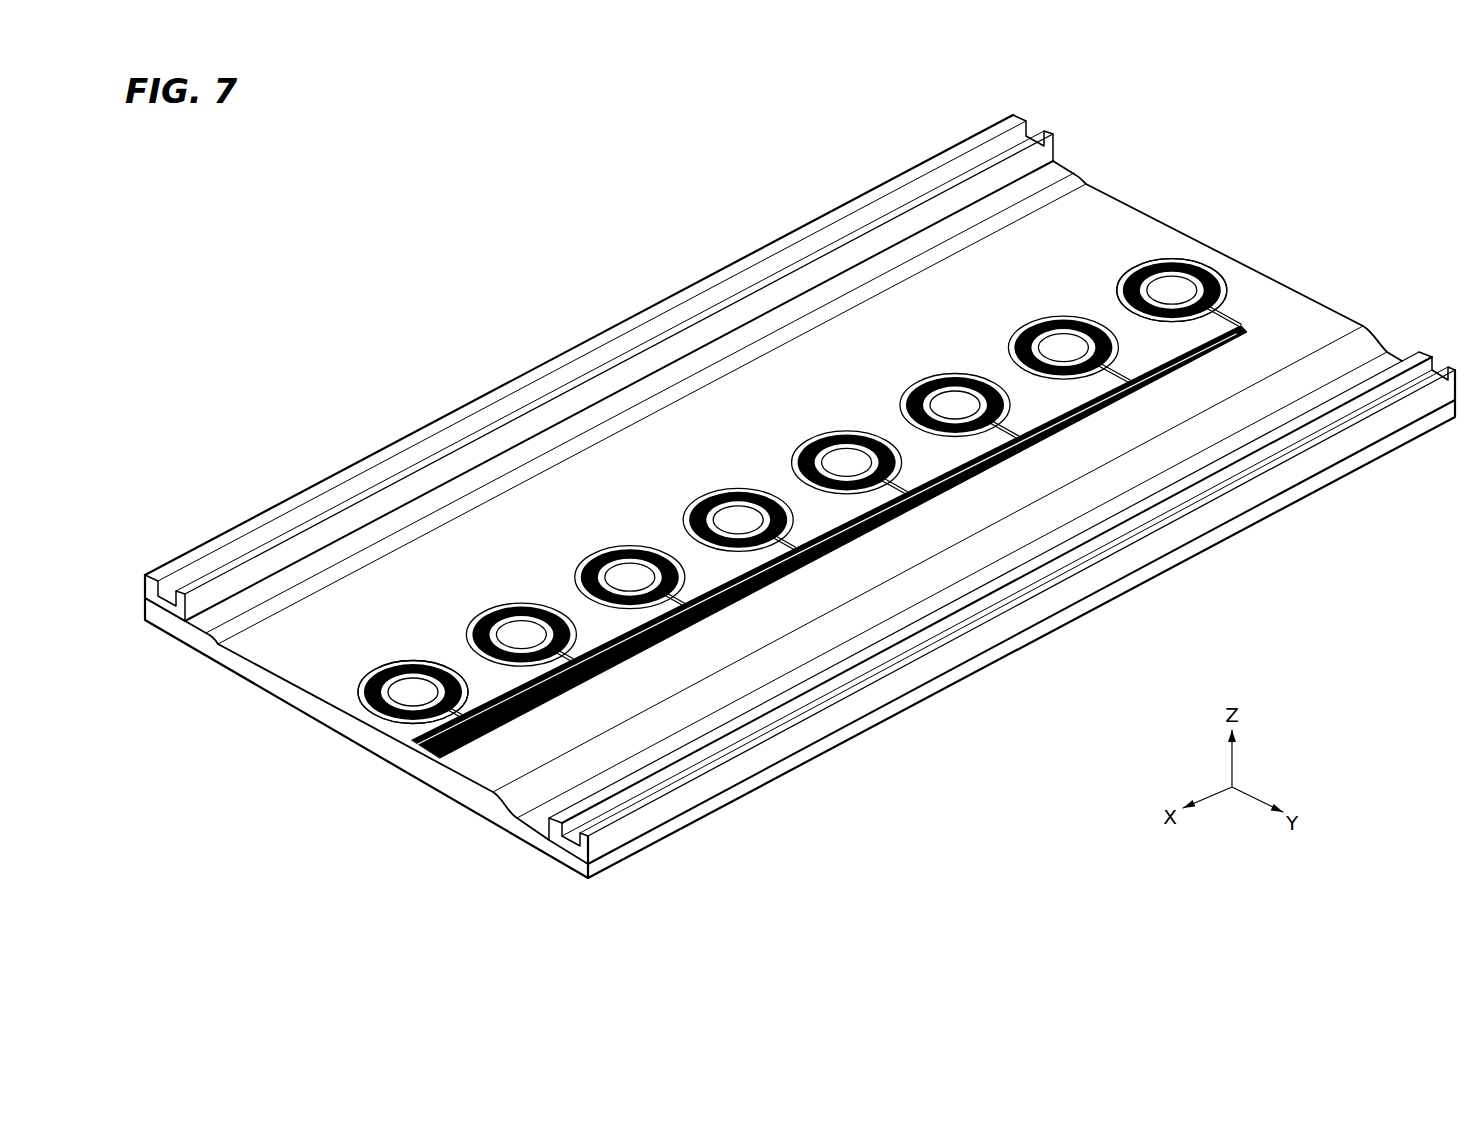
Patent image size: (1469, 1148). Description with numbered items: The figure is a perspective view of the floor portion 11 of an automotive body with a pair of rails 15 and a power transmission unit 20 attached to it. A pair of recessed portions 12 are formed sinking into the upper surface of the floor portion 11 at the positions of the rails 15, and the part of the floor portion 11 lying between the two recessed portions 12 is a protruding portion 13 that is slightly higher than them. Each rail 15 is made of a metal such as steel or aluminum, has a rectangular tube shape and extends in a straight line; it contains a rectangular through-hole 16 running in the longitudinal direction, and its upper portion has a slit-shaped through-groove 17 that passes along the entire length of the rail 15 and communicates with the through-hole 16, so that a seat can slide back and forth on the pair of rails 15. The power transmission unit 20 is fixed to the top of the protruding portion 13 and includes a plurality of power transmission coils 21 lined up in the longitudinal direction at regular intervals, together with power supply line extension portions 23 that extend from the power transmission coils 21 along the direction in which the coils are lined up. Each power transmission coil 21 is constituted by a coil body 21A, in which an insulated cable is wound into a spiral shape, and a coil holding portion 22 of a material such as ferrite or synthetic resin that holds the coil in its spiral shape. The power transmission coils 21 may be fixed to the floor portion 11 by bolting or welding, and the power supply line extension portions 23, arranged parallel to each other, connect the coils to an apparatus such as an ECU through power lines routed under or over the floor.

The floor portion 11 is at (384, 744).
The recessed portion 12 is at (212, 632).
The protruding portion 13 is at (325, 665).
The rail 15 is at (781, 523).
The through-hole 16 is at (172, 604).
The through-groove 17 is at (332, 490).
The power transmission unit 20 is at (788, 423).
The power transmission coil 21 is at (778, 455).
The coil body 21A is at (378, 672).
The coil holding portion 22 is at (431, 661).
The power supply line extension portion 23 is at (868, 536).